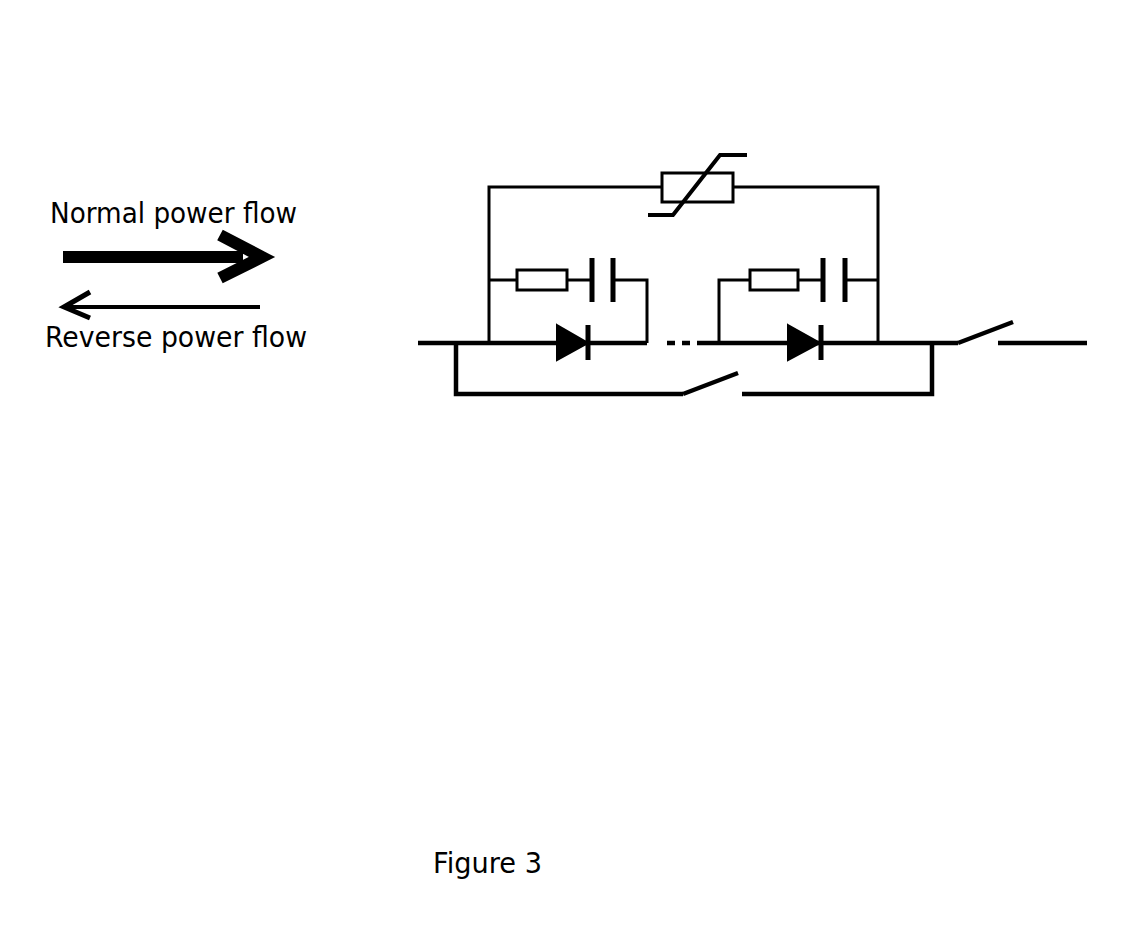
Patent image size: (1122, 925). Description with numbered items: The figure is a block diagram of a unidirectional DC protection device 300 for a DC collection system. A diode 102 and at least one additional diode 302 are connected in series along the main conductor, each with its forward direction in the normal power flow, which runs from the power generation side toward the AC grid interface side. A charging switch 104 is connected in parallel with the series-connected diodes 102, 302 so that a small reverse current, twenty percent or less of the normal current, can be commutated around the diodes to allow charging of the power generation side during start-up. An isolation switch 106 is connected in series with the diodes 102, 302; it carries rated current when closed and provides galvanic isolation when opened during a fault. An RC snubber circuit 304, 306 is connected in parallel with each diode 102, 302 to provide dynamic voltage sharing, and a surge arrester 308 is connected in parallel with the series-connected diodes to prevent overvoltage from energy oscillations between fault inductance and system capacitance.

The unidirectional DC protection device 300 is at (360, 78).
The diode 102 is at (577, 378).
The additional diode 302 is at (796, 380).
The charging switch 104 is at (713, 429).
The isolation switch 106 is at (1003, 377).
The RC snubber circuit 304 is at (548, 225).
The RC snubber circuit 306 is at (813, 223).
The surge arrester 308 is at (687, 131).